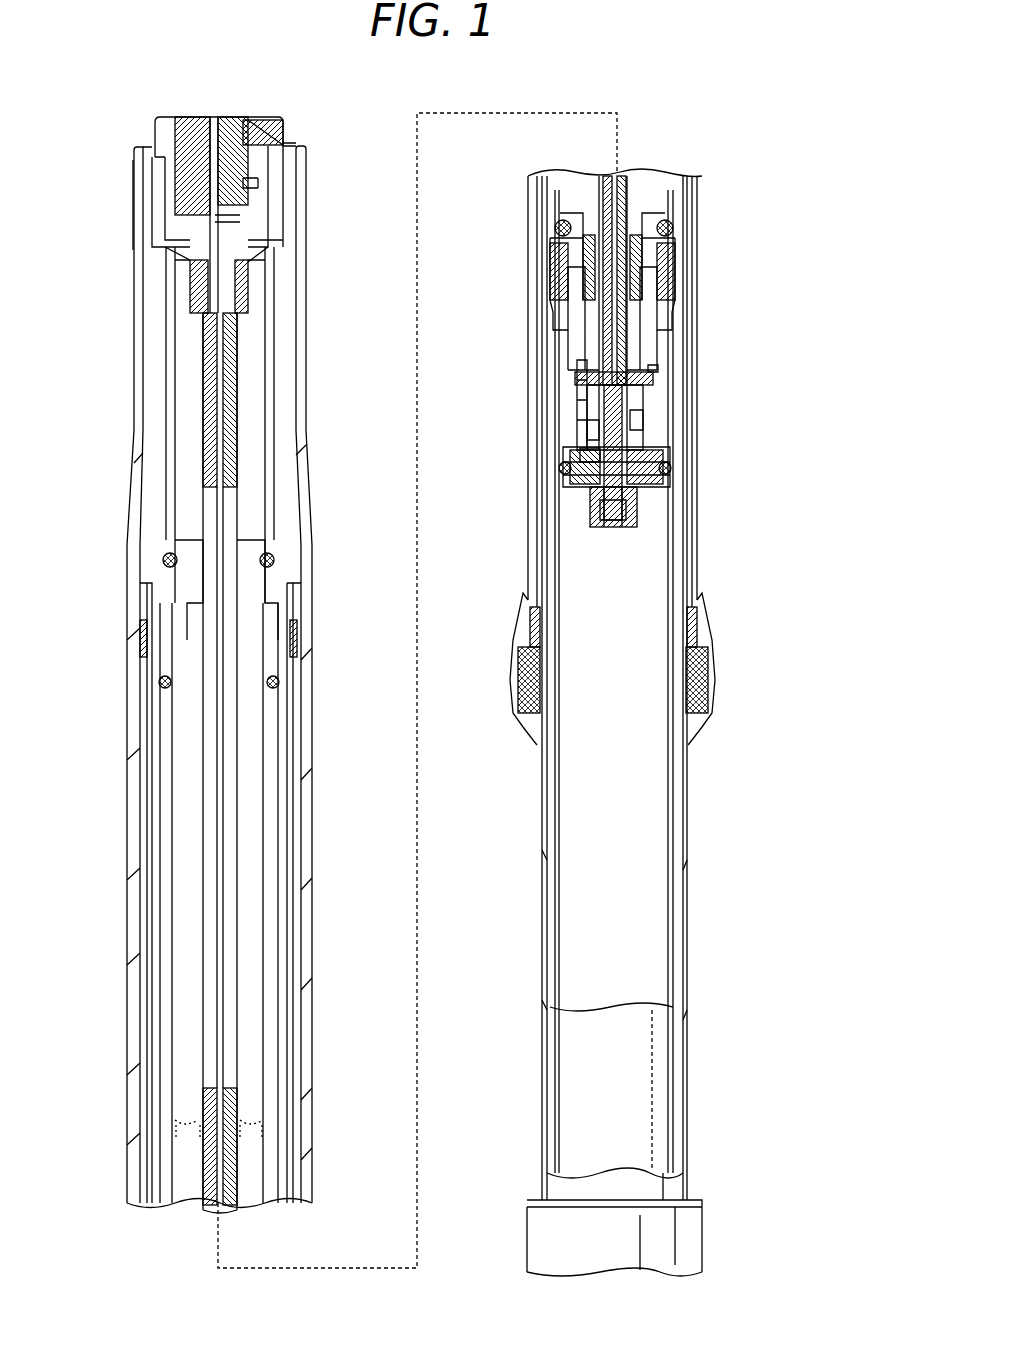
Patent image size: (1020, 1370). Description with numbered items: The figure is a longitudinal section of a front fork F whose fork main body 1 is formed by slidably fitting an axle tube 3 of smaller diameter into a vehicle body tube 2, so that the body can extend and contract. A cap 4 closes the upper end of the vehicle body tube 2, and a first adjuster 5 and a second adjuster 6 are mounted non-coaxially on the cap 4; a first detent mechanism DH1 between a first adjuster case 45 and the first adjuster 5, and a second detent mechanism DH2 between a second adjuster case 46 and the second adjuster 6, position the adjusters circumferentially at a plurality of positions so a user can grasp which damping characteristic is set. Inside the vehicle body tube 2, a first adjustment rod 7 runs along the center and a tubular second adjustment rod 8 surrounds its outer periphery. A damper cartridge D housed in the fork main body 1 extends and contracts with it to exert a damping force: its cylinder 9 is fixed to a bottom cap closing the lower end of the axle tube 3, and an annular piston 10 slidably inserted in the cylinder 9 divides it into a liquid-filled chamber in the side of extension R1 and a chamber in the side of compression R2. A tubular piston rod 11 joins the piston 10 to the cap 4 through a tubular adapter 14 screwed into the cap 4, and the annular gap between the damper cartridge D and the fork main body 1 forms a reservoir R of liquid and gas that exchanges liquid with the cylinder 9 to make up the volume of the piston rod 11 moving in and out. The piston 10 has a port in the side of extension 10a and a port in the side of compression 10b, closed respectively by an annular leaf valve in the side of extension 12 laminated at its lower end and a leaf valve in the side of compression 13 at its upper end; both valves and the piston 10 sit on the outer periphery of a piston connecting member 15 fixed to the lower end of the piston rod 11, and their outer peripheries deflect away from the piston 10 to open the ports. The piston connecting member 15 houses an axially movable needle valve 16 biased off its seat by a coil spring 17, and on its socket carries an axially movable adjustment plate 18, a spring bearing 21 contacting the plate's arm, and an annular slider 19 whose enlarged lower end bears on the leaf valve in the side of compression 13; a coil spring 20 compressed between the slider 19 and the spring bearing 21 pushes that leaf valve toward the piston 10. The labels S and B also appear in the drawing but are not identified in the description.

The fork main body 1 is at (218, 629).
The vehicle body tube 2 is at (302, 380).
The axle tube 3 is at (690, 882).
The cap 4 is at (258, 111).
The first adjuster 5 is at (237, 115).
The second adjuster 6 is at (185, 115).
The first adjustment rod 7 is at (220, 458).
The second adjustment rod 8 is at (205, 390).
The cylinder 9 is at (685, 812).
The piston 10 is at (622, 486).
The port in the side of extension 10a is at (668, 462).
The port in the side of compression 10b is at (590, 470).
The piston rod 11 is at (635, 185).
The leaf valve in the side of extension 12 is at (652, 497).
The leaf valve in the side of compression 13 is at (655, 445).
The tubular adapter 14 is at (293, 247).
The piston connecting member 15 is at (641, 393).
The needle valve 16 is at (580, 428).
The coil spring 17 is at (583, 396).
The adjustment plate 18 is at (640, 376).
The slider 19 is at (583, 455).
The coil spring 20 is at (650, 421).
The spring bearing 21 is at (655, 370).
The first adjuster case 45 is at (277, 146).
The second adjuster case 46 is at (173, 176).
The first detent mechanism DH1 is at (247, 183).
The second detent mechanism DH2 is at (227, 218).
The front fork F is at (224, 626).
The seal S is at (277, 561).
The reservoir R is at (252, 1068).
The chamber in the side of extension R1 is at (548, 362).
The chamber in the side of compression R2 is at (637, 780).
The bottom member B is at (592, 490).
The damper cartridge D is at (545, 775).